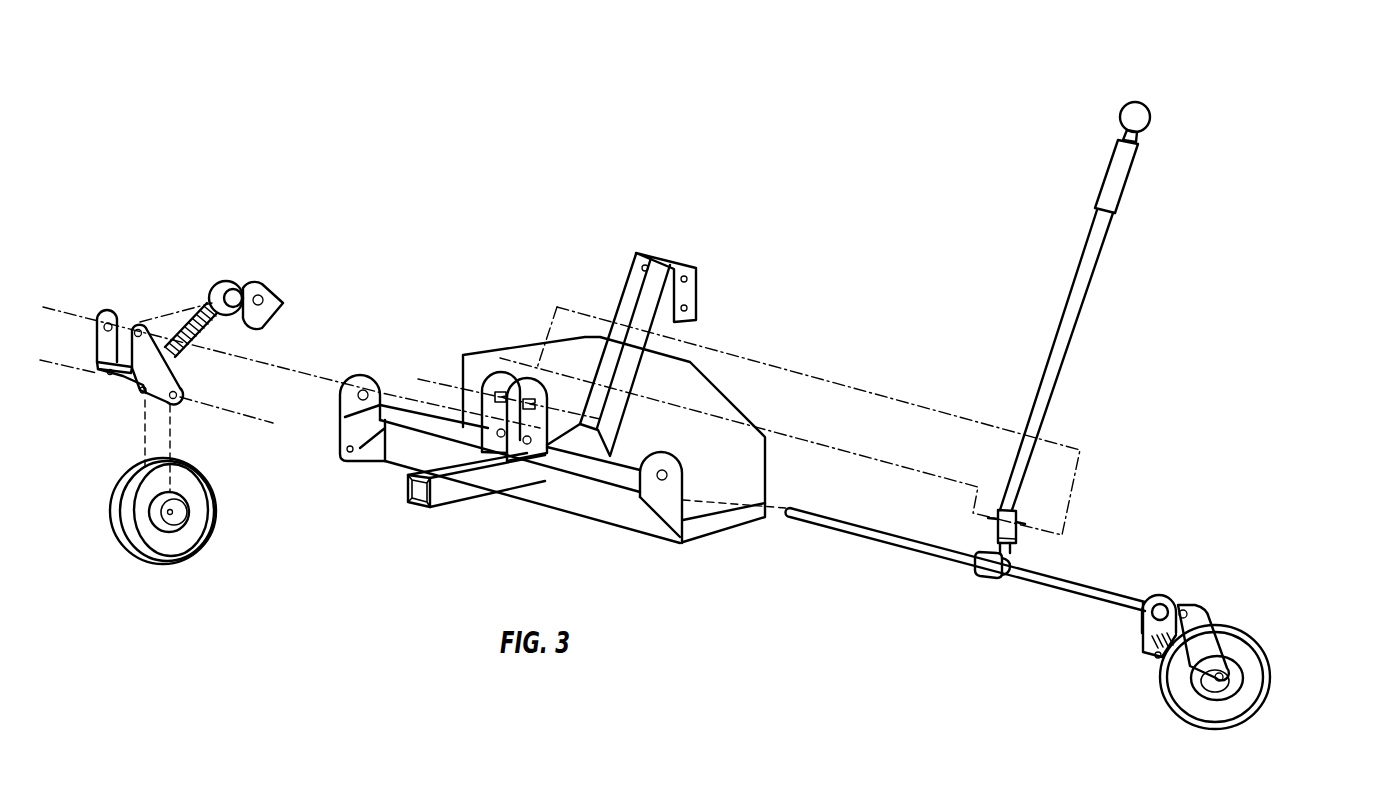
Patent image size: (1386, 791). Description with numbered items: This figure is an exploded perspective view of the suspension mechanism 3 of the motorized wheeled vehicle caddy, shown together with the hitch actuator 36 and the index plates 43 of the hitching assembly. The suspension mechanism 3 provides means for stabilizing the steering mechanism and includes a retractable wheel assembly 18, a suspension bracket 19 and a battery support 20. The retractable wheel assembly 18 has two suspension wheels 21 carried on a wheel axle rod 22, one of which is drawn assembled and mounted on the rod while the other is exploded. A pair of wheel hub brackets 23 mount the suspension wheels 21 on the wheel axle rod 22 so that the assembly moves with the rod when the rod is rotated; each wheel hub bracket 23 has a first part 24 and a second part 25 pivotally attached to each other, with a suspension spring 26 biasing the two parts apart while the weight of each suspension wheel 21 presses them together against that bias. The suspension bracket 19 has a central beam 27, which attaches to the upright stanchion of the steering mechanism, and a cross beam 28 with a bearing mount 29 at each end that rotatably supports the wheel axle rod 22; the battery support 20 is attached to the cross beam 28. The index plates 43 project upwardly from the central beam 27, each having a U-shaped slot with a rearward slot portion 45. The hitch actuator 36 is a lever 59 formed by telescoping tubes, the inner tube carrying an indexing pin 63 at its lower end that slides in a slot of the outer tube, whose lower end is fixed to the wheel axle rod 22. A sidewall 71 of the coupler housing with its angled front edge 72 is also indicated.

The suspension mechanism 3 is at (805, 152).
The retractable wheel assembly 18 is at (1321, 594).
The suspension bracket 19 is at (642, 386).
The battery support 20 is at (522, 344).
The suspension wheel 21 is at (216, 492).
The wheel axle rod 22 is at (1120, 589).
The wheel hub bracket 23 is at (77, 266).
The first part 24 is at (110, 383).
The second part 25 is at (286, 320).
The suspension spring 26 is at (180, 358).
The central beam 27 is at (448, 501).
The cross beam 28 is at (563, 514).
The bearing mount 29 is at (364, 373).
The hitch actuator 36 is at (1322, 98).
The index plate 43 is at (484, 420).
The rearward slot portion 45 is at (548, 404).
The lever 59 is at (1090, 287).
The indexing pin 63 is at (1023, 526).
The sidewall 71 is at (1116, 86).
The angled front edge 72 is at (971, 541).